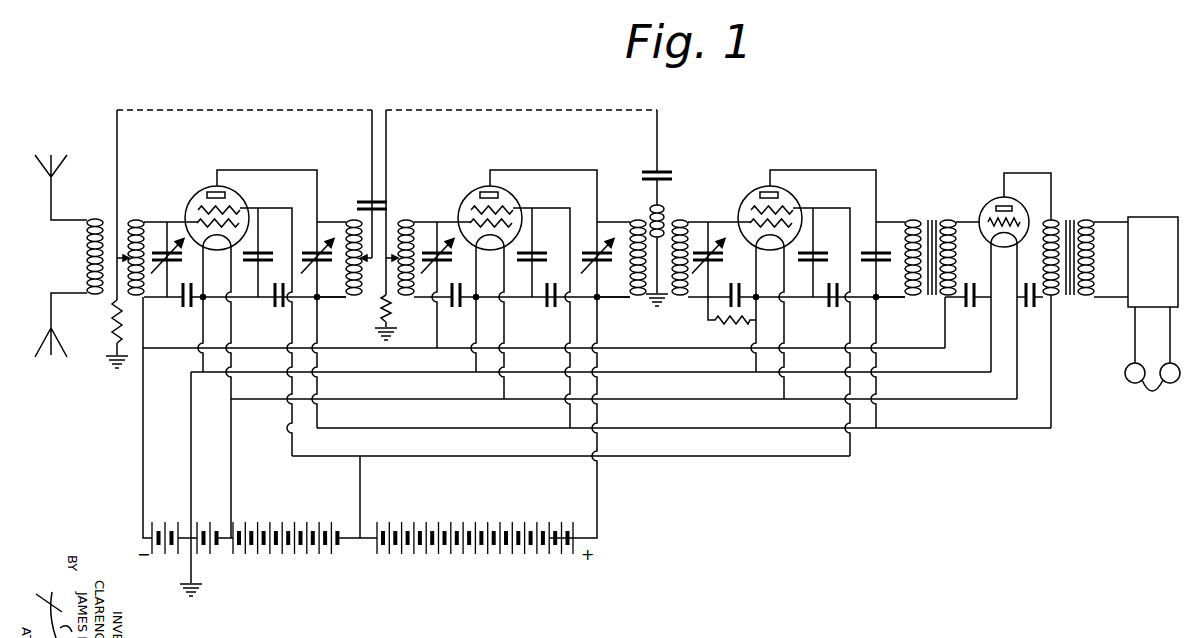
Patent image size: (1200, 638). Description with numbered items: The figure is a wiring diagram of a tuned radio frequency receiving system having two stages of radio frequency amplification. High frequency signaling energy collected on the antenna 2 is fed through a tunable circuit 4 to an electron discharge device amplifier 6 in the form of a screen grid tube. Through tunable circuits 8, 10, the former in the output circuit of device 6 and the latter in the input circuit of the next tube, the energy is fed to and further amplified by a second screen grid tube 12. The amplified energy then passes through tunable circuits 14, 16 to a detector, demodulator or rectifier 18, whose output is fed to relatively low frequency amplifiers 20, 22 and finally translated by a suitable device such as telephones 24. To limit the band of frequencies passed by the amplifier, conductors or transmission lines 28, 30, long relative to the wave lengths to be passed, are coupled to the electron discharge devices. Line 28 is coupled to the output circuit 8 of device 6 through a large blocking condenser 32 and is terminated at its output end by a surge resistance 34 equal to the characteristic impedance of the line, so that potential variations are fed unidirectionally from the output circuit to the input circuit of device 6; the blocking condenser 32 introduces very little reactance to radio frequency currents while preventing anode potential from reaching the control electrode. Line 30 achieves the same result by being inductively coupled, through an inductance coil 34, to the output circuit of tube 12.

The antenna 2 is at (53, 197).
The tunable circuit 4 is at (157, 227).
The electron discharge device amplifier 6 is at (243, 199).
The tunable circuit 8 is at (340, 226).
The tunable circuit 10 is at (424, 226).
The screen grid tube 12 is at (476, 193).
The tunable circuit 14 is at (619, 227).
The tunable circuit 16 is at (696, 228).
The detector 18 is at (797, 204).
The low frequency amplifier 20 is at (981, 206).
The low frequency amplifier 22 is at (1150, 216).
The telephones 24 is at (1128, 380).
The transmission line 28 is at (241, 109).
The transmission line 30 is at (508, 109).
The blocking condenser 32 is at (365, 199).
The surge resistance 34 is at (109, 325).